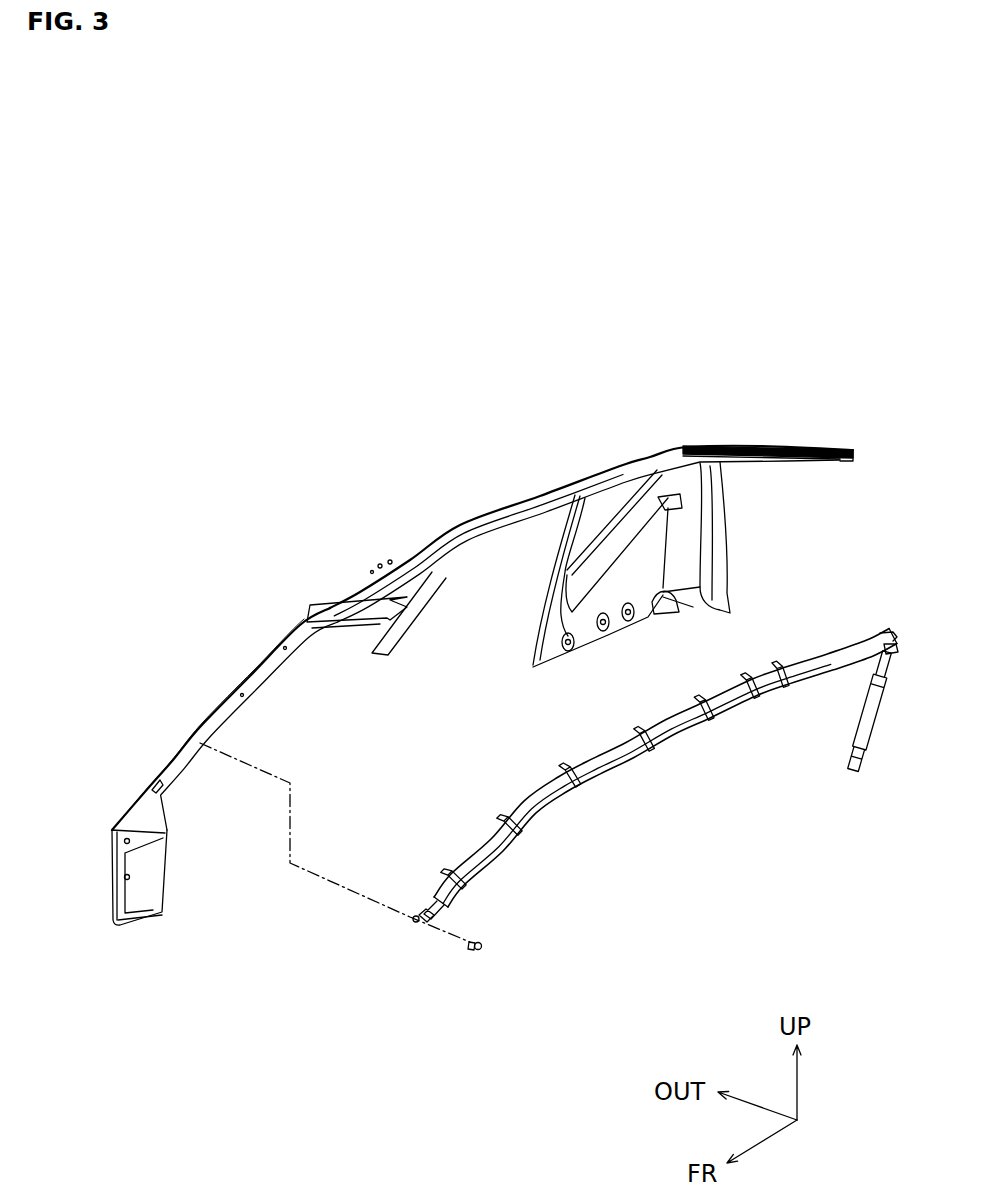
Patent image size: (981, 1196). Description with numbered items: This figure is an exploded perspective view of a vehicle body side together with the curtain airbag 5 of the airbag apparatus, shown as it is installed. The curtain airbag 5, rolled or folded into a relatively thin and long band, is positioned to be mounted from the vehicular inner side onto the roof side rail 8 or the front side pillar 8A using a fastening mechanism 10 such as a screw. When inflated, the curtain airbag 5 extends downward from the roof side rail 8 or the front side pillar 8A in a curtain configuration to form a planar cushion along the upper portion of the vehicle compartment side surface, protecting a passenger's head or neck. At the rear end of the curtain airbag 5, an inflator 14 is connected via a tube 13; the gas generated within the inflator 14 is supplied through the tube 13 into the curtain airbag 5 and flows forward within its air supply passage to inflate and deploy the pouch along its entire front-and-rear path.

The curtain airbag 5 is at (558, 807).
The roof side rail 8 is at (482, 673).
The front side pillar 8A is at (272, 660).
The fastening mechanism 10 is at (476, 948).
The tube 13 is at (897, 655).
The inflator 14 is at (860, 718).